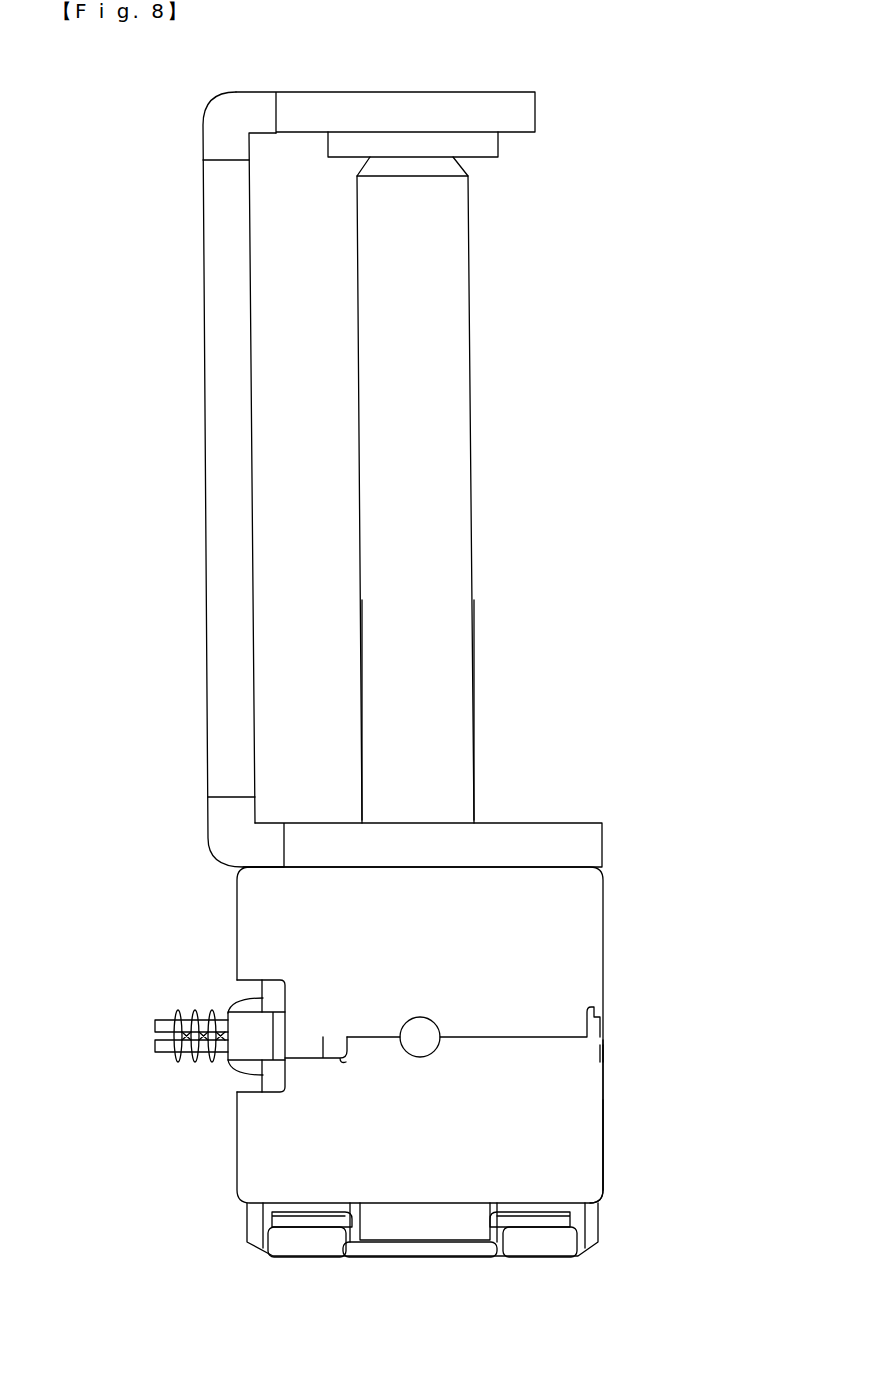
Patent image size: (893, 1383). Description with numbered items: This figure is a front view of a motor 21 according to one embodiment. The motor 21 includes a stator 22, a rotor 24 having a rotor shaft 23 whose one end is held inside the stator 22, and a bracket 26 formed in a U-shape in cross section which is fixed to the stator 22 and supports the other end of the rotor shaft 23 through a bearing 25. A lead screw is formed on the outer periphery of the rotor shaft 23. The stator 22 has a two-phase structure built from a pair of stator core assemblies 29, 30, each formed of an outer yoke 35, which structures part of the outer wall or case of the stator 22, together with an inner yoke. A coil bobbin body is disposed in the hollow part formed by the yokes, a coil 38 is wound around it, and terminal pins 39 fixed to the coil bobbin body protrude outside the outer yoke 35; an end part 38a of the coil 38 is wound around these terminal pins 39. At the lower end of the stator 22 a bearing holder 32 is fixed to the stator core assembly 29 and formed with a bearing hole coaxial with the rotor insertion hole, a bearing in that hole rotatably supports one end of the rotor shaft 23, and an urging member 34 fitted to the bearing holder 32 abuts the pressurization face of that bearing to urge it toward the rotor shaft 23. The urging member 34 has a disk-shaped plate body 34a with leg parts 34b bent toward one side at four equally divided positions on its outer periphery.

The motor 21 is at (174, 227).
The stator 22 is at (730, 893).
The rotor shaft 23 is at (453, 413).
The rotor 24 is at (481, 608).
The bearing 25 is at (487, 150).
The bracket 26 is at (217, 400).
The stator core assembly 29 is at (611, 1102).
The stator core assembly 30 is at (611, 975).
The bearing holder 32 is at (458, 1225).
The urging member 34 is at (277, 1259).
The plate body 34a is at (398, 1257).
The leg parts 34b is at (308, 1243).
The outer yoke 35 is at (588, 1148).
The coil 38 is at (267, 993).
The end part of the coil 38a is at (178, 1010).
The terminal pins 39 is at (157, 1021).